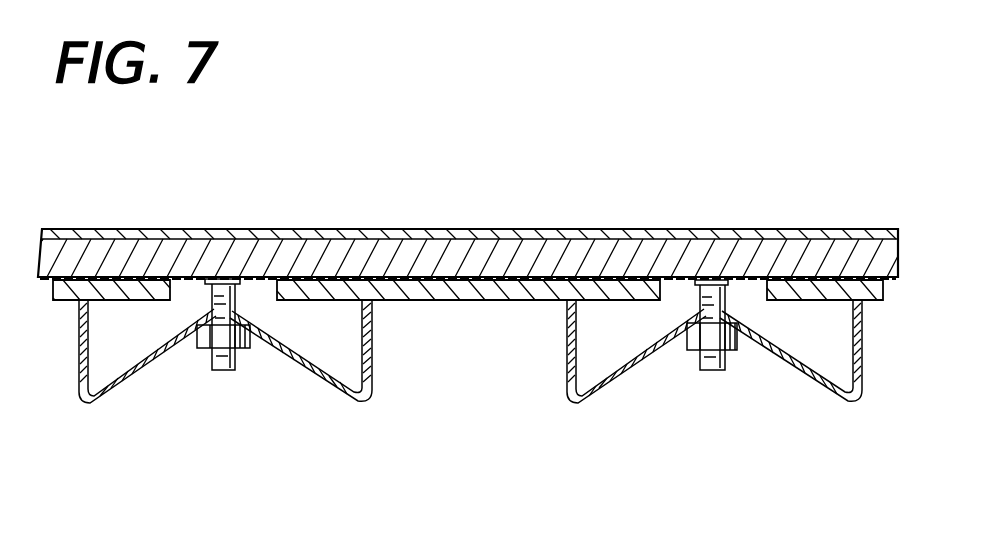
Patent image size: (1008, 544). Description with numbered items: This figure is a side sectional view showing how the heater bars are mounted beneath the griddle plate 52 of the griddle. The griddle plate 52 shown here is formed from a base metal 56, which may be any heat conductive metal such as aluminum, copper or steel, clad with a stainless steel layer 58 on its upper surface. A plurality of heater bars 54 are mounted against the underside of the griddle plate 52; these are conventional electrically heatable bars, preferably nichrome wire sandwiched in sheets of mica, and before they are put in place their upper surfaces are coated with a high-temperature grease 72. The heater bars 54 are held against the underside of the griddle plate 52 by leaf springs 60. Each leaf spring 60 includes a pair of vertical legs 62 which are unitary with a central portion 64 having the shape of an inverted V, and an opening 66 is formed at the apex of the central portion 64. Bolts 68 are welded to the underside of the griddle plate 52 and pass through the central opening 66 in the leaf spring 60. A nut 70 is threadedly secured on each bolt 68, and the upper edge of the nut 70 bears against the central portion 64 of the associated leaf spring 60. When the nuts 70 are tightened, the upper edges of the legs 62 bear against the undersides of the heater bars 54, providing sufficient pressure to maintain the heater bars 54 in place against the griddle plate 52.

The griddle plate 52 is at (642, 230).
The heater bar 54 is at (64, 300).
The base metal 56 is at (293, 250).
The stainless steel layer 58 is at (407, 230).
The leaf spring 60 is at (292, 358).
The vertical leg 62 is at (567, 353).
The central portion 64 is at (647, 366).
The opening 66 is at (697, 312).
The bolt 68 is at (227, 370).
The nut 70 is at (199, 348).
The high-temperature grease 72 is at (503, 277).